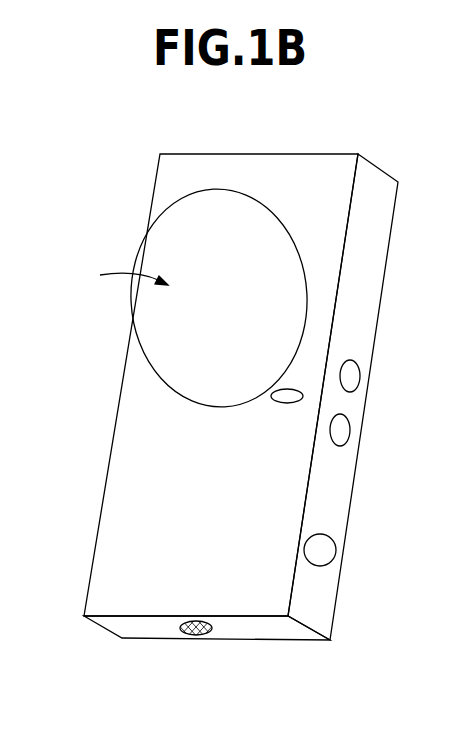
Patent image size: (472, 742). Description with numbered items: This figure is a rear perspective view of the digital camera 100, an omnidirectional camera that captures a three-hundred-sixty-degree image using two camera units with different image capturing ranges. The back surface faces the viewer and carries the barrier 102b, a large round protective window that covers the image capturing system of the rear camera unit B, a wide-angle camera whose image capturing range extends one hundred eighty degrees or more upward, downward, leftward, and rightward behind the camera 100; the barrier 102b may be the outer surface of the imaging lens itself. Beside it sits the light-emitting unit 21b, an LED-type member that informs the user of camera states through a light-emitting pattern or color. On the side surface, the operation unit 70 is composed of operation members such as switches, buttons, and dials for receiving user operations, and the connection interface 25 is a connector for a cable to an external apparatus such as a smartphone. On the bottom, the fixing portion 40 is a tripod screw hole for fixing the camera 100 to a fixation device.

The digital camera 100 is at (281, 155).
The barrier 102b is at (156, 348).
The camera unit B is at (124, 273).
The light-emitting unit 21b is at (303, 396).
The operation unit 70 is at (356, 375).
The connection interface 25 is at (336, 550).
The fixing portion 40 is at (194, 636).